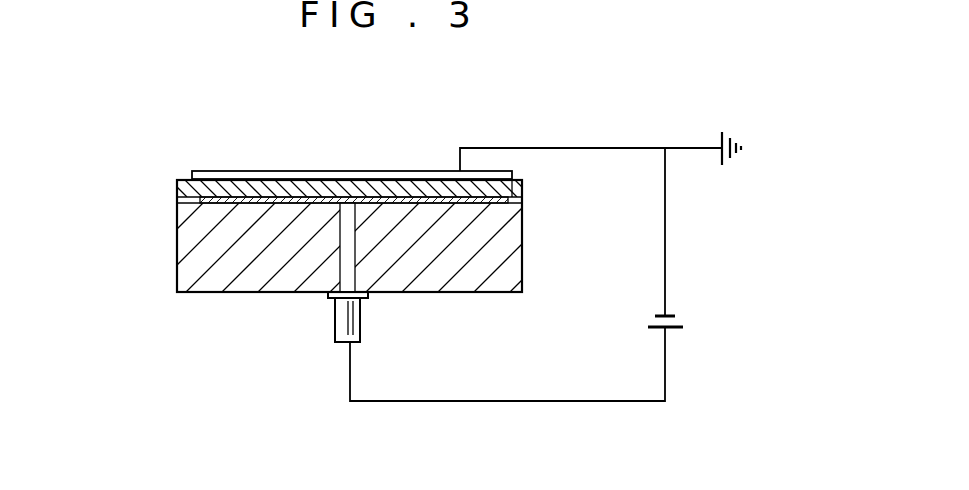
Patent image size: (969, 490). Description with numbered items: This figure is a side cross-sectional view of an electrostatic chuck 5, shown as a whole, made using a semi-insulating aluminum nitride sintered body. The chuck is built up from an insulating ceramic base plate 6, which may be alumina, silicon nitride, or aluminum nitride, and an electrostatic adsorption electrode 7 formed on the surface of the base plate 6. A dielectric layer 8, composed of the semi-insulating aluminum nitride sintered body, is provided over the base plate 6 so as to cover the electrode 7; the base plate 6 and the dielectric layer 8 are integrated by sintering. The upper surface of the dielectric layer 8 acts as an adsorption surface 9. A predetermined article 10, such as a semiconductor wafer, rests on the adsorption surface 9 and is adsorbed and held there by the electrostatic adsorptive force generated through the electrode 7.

The electrostatic chuck 5 is at (165, 224).
The insulating ceramic base plate 6 is at (207, 265).
The electrostatic adsorption electrode 7 is at (270, 203).
The dielectric layer 8 is at (180, 190).
The adsorption surface 9 is at (520, 176).
The article 10 is at (368, 171).